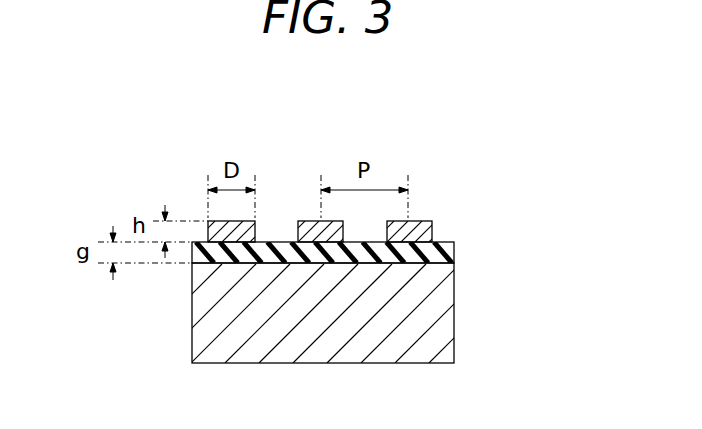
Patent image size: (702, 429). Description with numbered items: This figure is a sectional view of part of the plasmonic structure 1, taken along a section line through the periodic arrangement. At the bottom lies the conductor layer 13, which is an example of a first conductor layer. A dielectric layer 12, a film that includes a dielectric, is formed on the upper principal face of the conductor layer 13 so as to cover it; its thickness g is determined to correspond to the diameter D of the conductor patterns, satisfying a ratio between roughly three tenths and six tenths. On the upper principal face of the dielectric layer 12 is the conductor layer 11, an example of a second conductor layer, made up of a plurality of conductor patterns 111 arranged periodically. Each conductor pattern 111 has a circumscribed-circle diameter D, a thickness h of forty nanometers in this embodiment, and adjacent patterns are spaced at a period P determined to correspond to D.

The plasmonic structure 1 is at (451, 152).
The conductor layer 11 is at (489, 221).
The conductor patterns 111 is at (425, 221).
The dielectric layer 12 is at (454, 252).
The conductor layer 13 is at (454, 311).